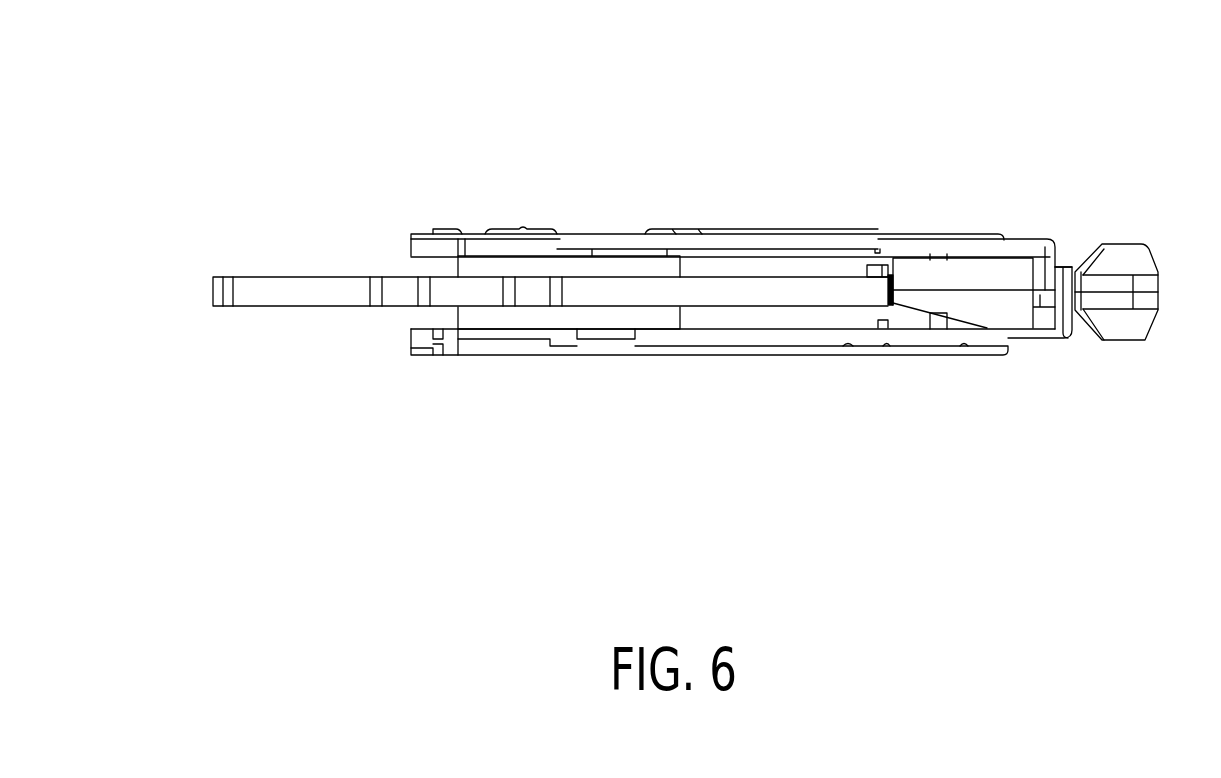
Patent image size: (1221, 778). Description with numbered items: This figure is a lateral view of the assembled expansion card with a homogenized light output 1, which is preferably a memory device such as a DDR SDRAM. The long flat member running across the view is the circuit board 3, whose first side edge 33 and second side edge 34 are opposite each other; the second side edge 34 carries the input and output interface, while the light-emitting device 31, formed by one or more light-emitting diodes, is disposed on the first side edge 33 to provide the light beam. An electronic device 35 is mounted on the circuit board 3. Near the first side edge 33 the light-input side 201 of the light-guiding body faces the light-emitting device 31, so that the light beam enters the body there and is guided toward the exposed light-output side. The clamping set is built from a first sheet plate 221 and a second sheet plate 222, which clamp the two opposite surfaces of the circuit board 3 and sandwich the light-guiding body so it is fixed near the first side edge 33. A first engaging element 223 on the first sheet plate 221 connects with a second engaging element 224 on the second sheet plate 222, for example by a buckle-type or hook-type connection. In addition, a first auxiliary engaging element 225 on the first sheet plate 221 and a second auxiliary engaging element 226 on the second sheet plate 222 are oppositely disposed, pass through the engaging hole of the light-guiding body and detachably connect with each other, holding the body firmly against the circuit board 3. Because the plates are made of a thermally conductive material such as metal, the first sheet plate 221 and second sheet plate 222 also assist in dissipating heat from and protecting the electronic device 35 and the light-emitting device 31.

The expansion card with a homogenized light output 1 is at (1215, 53).
The circuit board 3 is at (285, 297).
The light-emitting device 31 is at (873, 265).
The first side edge 33 is at (890, 293).
The second side edge 34 is at (213, 293).
The electronic device 35 is at (540, 272).
The light-input side 201 is at (895, 303).
The first sheet plate 221 is at (945, 248).
The second sheet plate 222 is at (1017, 337).
The first engaging element 223 is at (1045, 270).
The second engaging element 224 is at (1065, 313).
The first auxiliary engaging element 225 is at (942, 257).
The second auxiliary engaging element 226 is at (940, 322).